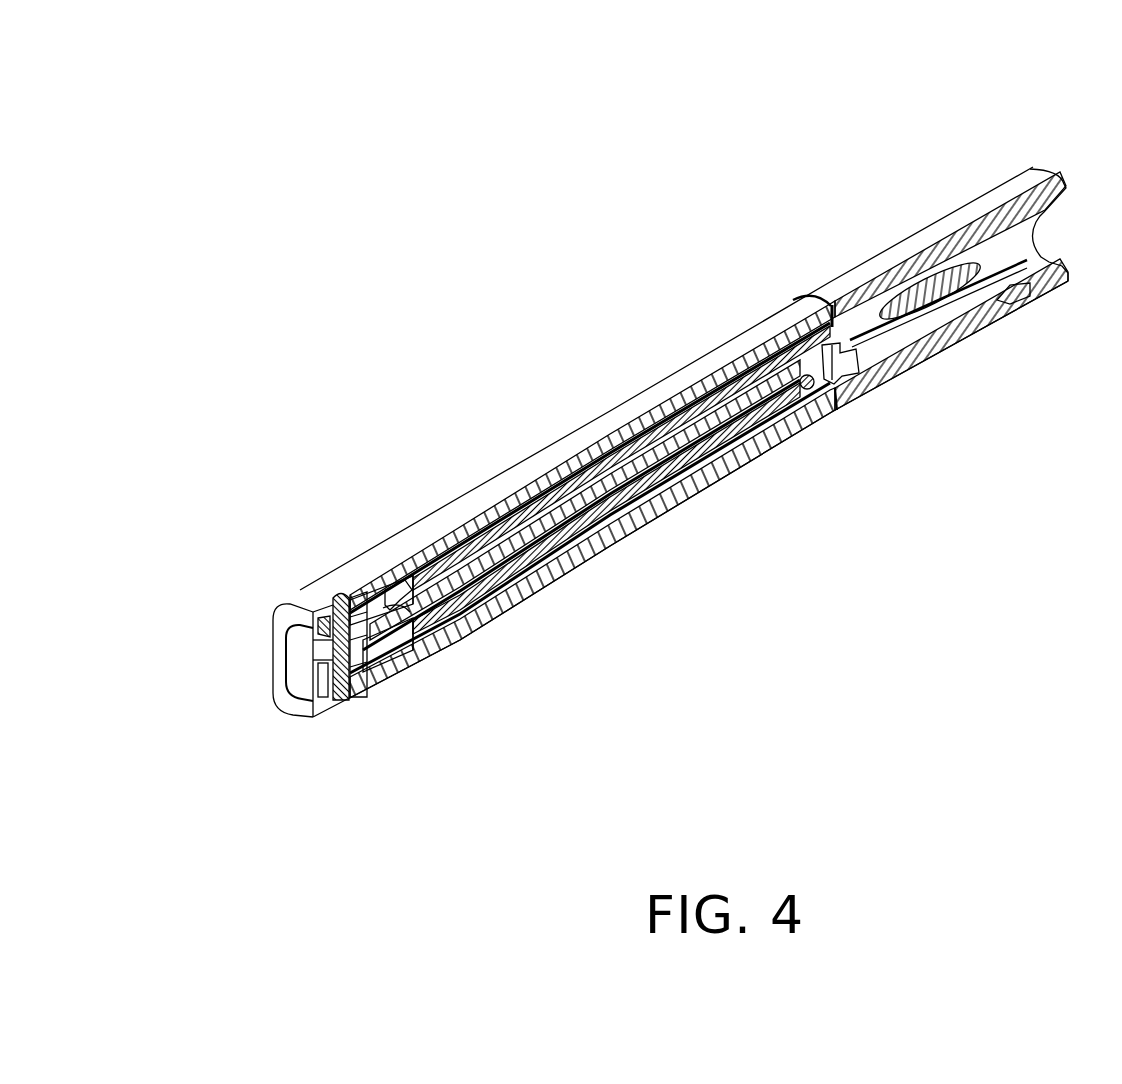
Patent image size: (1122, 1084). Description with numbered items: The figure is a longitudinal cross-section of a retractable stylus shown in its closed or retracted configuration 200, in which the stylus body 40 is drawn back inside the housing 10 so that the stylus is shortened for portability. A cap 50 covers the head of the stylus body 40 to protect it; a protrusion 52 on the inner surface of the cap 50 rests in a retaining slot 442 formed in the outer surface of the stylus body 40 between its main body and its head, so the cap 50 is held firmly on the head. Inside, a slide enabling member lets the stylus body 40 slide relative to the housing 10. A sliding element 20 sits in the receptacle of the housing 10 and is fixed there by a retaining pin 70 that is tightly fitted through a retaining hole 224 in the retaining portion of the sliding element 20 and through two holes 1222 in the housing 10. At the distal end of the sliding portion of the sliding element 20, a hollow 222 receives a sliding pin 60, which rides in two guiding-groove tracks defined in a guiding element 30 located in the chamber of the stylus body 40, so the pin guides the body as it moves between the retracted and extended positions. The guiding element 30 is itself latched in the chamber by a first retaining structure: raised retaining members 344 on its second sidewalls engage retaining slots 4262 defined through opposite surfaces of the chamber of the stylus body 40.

The retracted configuration 200 is at (450, 146).
The housing 10 is at (463, 517).
The sliding element 20 is at (658, 420).
The guiding element 30 is at (571, 477).
The stylus body 40 is at (503, 507).
The cap 50 is at (992, 205).
The protrusion 52 is at (862, 300).
The sliding pin 60 is at (778, 352).
The retaining pin 70 is at (350, 700).
The hollow 222 is at (808, 392).
The retaining hole 224 is at (317, 650).
The retaining members 344 is at (377, 588).
The retaining slot 442 is at (873, 303).
The holes 1222 is at (325, 588).
The retaining slots 4262 is at (392, 580).